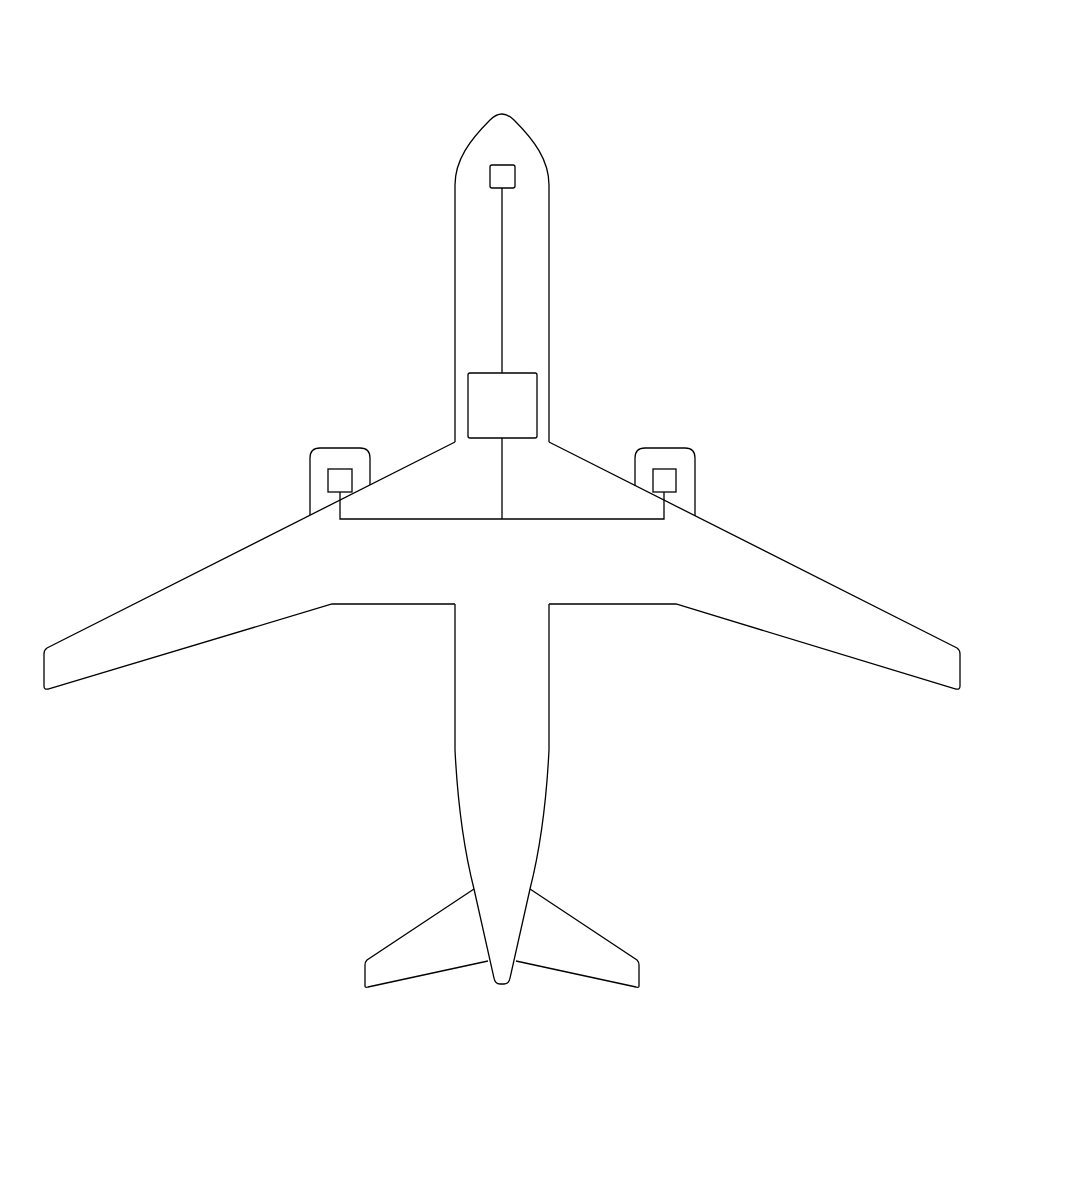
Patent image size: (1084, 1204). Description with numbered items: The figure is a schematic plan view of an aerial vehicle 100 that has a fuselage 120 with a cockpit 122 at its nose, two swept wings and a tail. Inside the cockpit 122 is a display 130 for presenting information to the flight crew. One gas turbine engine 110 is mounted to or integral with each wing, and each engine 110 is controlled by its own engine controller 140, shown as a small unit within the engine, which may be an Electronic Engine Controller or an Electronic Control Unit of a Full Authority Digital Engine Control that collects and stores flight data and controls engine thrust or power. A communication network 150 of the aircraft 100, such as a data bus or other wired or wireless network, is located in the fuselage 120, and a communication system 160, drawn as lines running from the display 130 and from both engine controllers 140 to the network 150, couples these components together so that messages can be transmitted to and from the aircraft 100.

The aerial vehicle 100 is at (546, 70).
The gas turbine engine 110 is at (342, 447).
The fuselage 120 is at (578, 266).
The cockpit 122 is at (544, 170).
The display 130 is at (490, 178).
The engine controller 140 is at (328, 477).
The communication network 150 is at (518, 418).
The communication system 160 is at (502, 316).